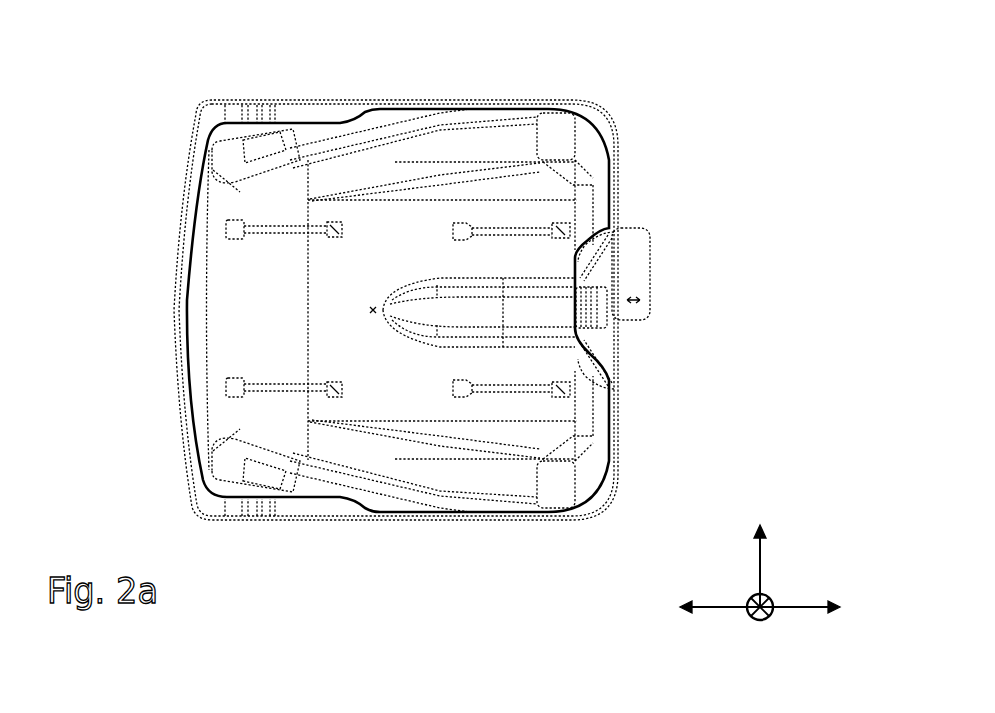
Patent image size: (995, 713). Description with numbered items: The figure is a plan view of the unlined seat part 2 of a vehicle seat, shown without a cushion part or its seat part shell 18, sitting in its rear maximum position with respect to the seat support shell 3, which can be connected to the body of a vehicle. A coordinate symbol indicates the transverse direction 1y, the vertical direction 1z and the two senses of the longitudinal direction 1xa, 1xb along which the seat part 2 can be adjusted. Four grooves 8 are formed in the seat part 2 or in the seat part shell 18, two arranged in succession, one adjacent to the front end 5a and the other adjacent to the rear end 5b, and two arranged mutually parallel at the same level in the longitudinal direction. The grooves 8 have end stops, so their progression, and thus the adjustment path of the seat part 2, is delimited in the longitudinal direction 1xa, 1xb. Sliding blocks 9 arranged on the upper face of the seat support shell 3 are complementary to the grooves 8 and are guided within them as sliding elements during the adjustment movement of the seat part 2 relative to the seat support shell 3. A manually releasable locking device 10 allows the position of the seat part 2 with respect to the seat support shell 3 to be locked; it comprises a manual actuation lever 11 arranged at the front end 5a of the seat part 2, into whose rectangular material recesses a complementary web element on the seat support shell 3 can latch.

The seat part 2 is at (500, 73).
The seat support shell 3 is at (222, 103).
The seat part shell 18 is at (592, 152).
The front end 5a is at (634, 390).
The rear end 5b is at (154, 307).
The grooves 8 is at (258, 235).
The sliding blocks 9 is at (334, 238).
The locking device 10 is at (651, 330).
The manual actuation lever 11 is at (633, 246).
The transverse direction 1y is at (754, 545).
The longitudinal direction 1xa is at (812, 604).
The longitudinal direction 1xb is at (700, 604).
The vertical direction 1z is at (772, 614).